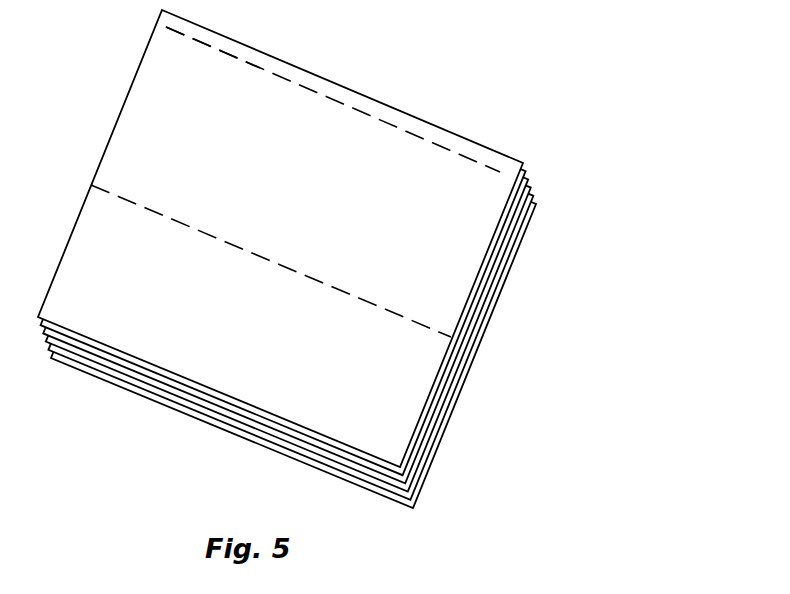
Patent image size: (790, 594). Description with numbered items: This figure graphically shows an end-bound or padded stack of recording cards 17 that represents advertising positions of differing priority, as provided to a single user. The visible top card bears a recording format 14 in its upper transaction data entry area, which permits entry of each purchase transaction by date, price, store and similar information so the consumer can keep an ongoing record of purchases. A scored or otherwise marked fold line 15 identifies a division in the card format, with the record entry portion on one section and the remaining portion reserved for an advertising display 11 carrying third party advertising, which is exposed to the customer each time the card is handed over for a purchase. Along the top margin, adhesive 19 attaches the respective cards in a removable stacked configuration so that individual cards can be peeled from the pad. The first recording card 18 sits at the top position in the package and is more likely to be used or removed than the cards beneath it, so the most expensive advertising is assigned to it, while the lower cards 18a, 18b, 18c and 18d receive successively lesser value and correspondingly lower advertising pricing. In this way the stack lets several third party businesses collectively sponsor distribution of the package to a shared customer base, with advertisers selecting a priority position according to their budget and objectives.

The advertising display 11 is at (352, 259).
The recording format 14 is at (240, 76).
The fold line 15 is at (427, 330).
The padded stack of recording cards 17 is at (352, 259).
The first recording card 18 is at (463, 147).
The lower position recording card 18a is at (525, 172).
The lower position recording card 18b is at (530, 190).
The lower position recording card 18c is at (515, 250).
The lower position recording card 18d is at (500, 295).
The adhesive 19 is at (353, 108).